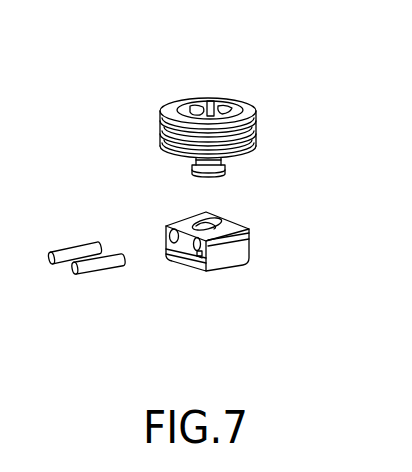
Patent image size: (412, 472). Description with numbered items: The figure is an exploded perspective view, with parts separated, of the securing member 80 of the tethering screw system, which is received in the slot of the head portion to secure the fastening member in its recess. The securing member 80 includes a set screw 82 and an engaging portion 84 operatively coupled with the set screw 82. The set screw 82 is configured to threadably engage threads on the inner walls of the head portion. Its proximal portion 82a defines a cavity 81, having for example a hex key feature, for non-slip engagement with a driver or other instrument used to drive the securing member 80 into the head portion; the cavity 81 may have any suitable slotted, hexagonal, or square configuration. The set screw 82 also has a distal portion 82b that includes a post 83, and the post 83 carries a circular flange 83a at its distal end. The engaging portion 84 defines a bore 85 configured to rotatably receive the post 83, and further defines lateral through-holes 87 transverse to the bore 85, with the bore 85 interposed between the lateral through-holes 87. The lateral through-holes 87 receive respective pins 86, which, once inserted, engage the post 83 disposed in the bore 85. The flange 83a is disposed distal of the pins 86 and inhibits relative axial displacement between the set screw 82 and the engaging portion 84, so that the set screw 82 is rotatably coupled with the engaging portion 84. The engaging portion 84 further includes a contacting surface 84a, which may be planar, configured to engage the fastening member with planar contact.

The securing member 80 is at (205, 181).
The cavity 81 is at (213, 98).
The set screw 82 is at (220, 88).
The proximal portion 82a is at (182, 98).
The distal portion 82b is at (194, 161).
The post 83 is at (143, 172).
The circular flange 83a is at (195, 173).
The engaging portion 84 is at (248, 273).
The contacting surface 84a is at (228, 272).
The bore 85 is at (219, 223).
The pins 86 is at (103, 273).
The lateral through-holes 87 is at (192, 265).